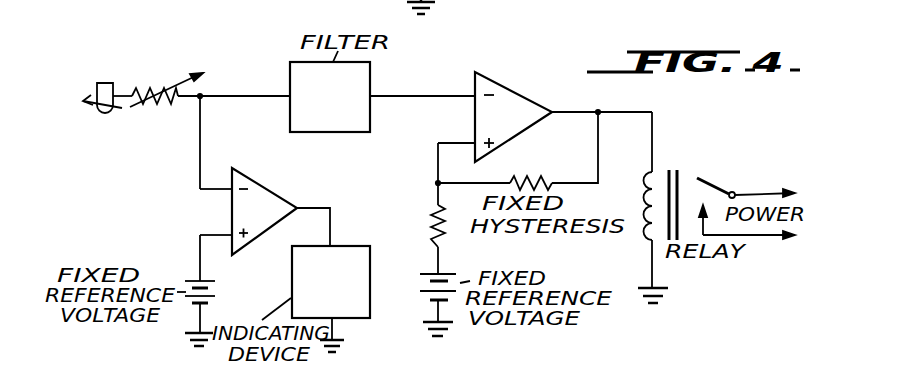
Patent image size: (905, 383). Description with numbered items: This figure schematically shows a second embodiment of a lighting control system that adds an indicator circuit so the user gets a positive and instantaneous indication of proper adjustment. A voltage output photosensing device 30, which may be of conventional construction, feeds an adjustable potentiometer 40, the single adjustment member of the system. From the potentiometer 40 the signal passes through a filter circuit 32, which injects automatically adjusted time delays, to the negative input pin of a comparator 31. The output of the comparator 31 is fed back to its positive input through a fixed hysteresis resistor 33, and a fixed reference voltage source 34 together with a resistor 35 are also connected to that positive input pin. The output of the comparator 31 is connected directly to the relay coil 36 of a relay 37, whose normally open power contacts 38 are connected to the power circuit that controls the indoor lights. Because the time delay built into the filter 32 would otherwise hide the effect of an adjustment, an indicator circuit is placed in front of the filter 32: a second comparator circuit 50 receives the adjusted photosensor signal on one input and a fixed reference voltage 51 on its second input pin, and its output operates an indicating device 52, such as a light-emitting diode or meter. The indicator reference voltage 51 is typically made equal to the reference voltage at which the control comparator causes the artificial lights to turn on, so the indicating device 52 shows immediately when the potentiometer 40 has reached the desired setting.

The photosensing device 30 is at (105, 113).
The adjustable potentiometer 40 is at (155, 105).
The filter circuit 32 is at (338, 108).
The comparator 31 is at (513, 127).
The fixed hysteresis resistor 33 is at (526, 178).
The resistor 35 is at (432, 222).
The fixed reference voltage source 34 is at (424, 286).
The relay coil 36 is at (650, 202).
The relay 37 is at (670, 165).
The normally open power contacts 38 is at (703, 179).
The second comparator circuit 50 is at (272, 221).
The fixed reference voltage 51 is at (212, 292).
The indicating device 52 is at (341, 294).